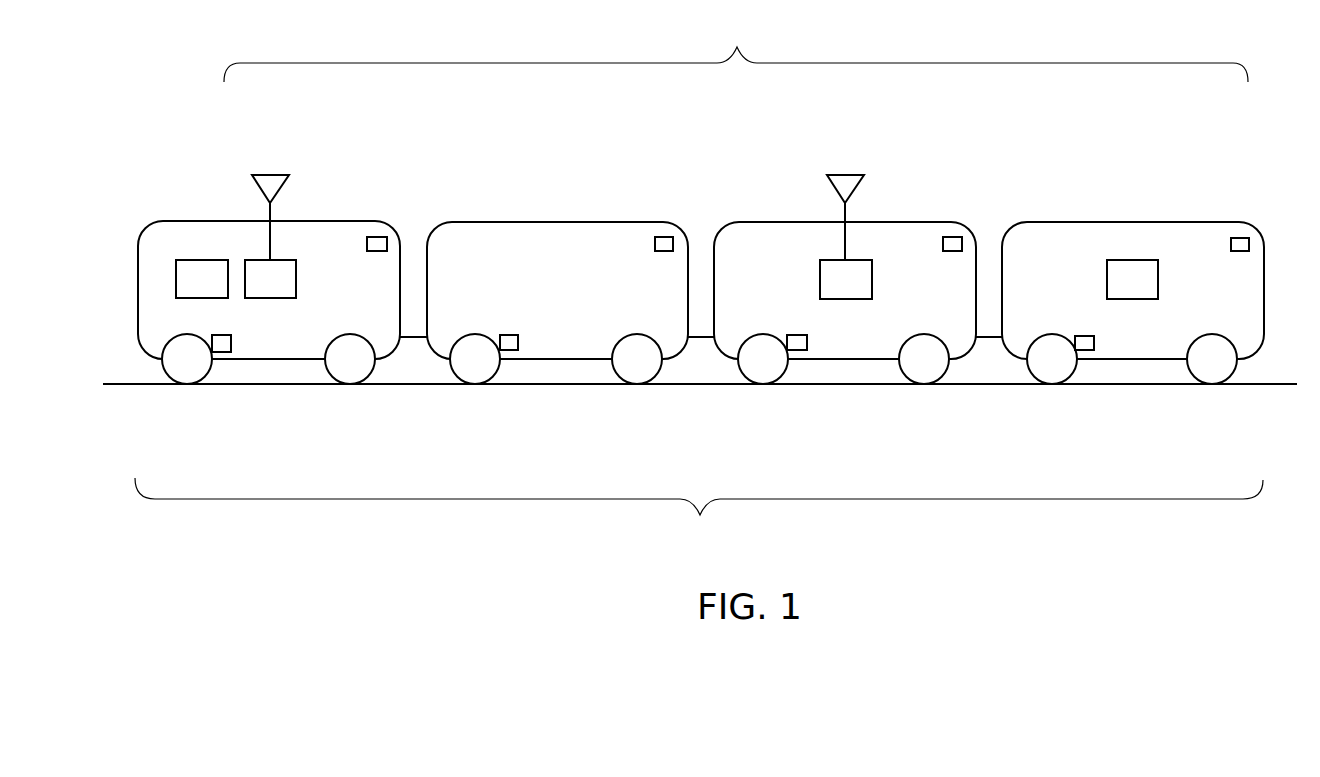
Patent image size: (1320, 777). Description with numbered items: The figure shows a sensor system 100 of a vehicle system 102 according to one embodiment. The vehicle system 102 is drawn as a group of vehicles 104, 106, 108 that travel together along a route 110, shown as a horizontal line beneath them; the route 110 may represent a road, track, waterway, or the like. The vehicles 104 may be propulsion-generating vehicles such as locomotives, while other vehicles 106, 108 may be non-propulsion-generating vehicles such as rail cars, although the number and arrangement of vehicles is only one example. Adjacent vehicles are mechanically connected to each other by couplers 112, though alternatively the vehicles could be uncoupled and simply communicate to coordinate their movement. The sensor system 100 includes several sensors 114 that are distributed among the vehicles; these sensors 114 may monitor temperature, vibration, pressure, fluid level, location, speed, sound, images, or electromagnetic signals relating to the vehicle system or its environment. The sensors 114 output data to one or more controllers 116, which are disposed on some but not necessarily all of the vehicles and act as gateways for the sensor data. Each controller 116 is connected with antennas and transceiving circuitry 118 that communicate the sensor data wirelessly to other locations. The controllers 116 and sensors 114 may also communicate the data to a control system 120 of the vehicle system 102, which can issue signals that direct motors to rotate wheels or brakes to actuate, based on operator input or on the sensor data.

The sensor system 100 is at (736, 51).
The vehicle system 102 is at (699, 513).
The vehicle 104 is at (328, 222).
The vehicle 106 is at (585, 222).
The vehicle 108 is at (1161, 222).
The route 110 is at (1277, 387).
The coupler 112 is at (987, 340).
The sensor 114 is at (232, 343).
The controller 116 is at (294, 258).
The antenna and transceiving circuitry 118 is at (270, 175).
The control system 120 is at (218, 260).